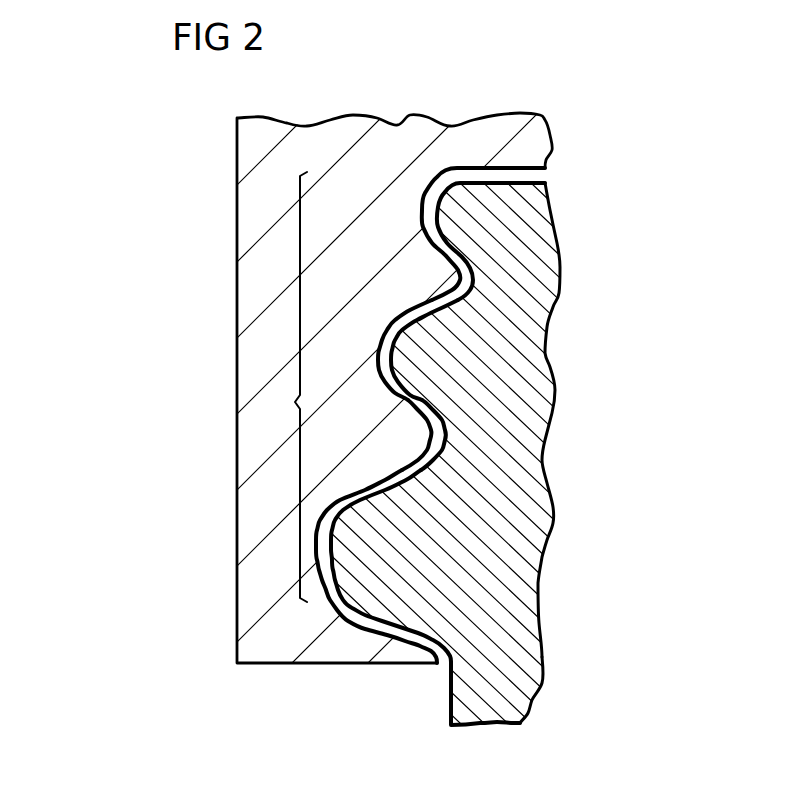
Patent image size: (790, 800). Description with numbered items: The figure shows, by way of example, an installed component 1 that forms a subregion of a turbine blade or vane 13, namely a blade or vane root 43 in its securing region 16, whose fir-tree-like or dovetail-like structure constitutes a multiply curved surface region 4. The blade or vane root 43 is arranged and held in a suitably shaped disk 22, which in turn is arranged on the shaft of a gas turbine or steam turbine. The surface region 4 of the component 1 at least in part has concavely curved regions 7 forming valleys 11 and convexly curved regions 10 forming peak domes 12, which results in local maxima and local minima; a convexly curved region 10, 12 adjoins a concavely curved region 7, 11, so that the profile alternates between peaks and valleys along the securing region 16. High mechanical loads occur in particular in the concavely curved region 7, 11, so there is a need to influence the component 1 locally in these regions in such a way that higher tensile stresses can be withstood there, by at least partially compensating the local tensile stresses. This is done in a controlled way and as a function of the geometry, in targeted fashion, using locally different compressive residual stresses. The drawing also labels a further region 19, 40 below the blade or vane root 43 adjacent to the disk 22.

The component 1 is at (395, 400).
The turbine blade or vane 13 is at (184, 650).
The surface region 4 is at (287, 387).
The concavely curved region 7 is at (524, 319).
The valley 11 is at (503, 283).
The convexly curved region 10 is at (489, 481).
The peak dome 12 is at (500, 372).
The securing region 16 is at (445, 400).
The blade or vane root 43 is at (523, 210).
The second component 19 is at (445, 545).
The second component 40 is at (507, 692).
The disk 22 is at (263, 302).